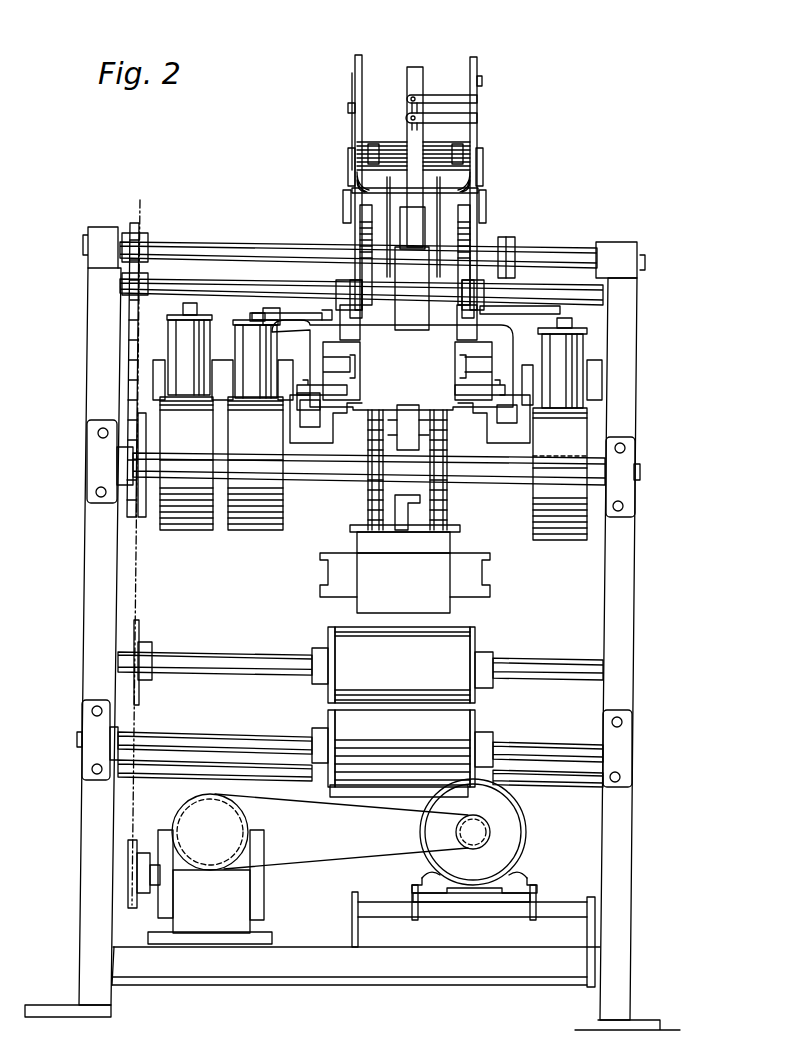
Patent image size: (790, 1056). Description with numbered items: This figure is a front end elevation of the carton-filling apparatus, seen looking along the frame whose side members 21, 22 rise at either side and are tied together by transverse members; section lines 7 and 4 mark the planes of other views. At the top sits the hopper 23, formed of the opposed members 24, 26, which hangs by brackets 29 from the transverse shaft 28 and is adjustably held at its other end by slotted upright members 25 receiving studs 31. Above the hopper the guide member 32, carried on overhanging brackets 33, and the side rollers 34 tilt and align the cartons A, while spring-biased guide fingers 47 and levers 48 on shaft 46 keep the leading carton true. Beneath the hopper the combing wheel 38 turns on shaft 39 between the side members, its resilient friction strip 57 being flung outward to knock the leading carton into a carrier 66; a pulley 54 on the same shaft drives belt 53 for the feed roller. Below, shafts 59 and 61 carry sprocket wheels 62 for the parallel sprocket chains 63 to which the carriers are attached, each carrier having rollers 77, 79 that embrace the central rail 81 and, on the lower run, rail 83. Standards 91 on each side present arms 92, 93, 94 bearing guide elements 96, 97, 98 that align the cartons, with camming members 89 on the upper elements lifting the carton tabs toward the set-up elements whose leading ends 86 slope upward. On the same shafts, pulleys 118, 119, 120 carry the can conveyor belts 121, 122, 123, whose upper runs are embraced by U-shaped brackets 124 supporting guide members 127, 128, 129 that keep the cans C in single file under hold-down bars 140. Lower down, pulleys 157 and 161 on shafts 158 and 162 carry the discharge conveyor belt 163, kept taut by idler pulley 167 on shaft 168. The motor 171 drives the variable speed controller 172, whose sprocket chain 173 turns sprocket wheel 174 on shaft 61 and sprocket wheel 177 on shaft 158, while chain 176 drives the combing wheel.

The section line 7- 7 is at (392, 18).
The section line 4- 4 is at (303, 218).
The side member 21 is at (86, 527).
The side member 22 is at (632, 533).
The hopper 23 is at (350, 90).
The hopper member 24 is at (354, 66).
The upright member 25 is at (348, 105).
The hopper member 26 is at (478, 60).
The transverse shaft 28 is at (578, 292).
The bracket 29 is at (345, 276).
The stud 31 is at (350, 112).
The guide member 32 is at (406, 72).
The overhanging bracket 33 is at (480, 115).
The roller 34 is at (378, 141).
The carton A is at (476, 168).
The combing wheel 38 is at (412, 228).
The shaft 39 is at (570, 258).
The shaft 46 is at (466, 182).
The guide finger 47 is at (437, 189).
The lever 48 is at (343, 206).
The belt 53 is at (508, 240).
The pulley 54 is at (517, 244).
The strip of resilient friction material 57 is at (410, 267).
The shaft 59 is at (640, 475).
The shaft 61 is at (369, 454).
The sprocket wheel 62 is at (368, 514).
The sprocket chain 63 is at (368, 418).
The carrier 66 is at (412, 358).
The roller 77 is at (418, 505).
The roller 79 is at (405, 530).
The rail 81 is at (397, 428).
The rail 83 is at (405, 518).
The leading end 86 is at (470, 306).
The camming member 89 is at (360, 325).
The standard 91 is at (315, 360).
The arm 92 is at (490, 338).
The arm 93 is at (488, 372).
The arm 94 is at (486, 412).
The guide element 96 is at (514, 308).
The guide element 97 is at (355, 365).
The guide element 98 is at (350, 390).
The conveyor belt pulley 118 is at (212, 528).
The conveyor belt pulley 119 is at (283, 522).
The conveyor belt pulley 120 is at (534, 520).
The conveyor belt 121 is at (180, 400).
The conveyor belt 122 is at (250, 400).
The conveyor belt 123 is at (560, 412).
The U-shaped bracket 124 is at (160, 362).
The guide member 127 is at (185, 345).
The guide member 128 is at (240, 350).
The guide member 129 is at (558, 365).
The can C is at (210, 340).
The hold-down bar 140 is at (255, 313).
The pulley 157 is at (478, 638).
The shaft 158 is at (262, 655).
The pulley 161 is at (478, 728).
The shaft 162 is at (560, 752).
The discharge conveyor belt 163 is at (345, 626).
The idler pulley 167 is at (367, 795).
The shaft 168 is at (270, 777).
The motor 171 is at (522, 812).
The variable speed controller 172 is at (240, 822).
The sprocket chain 173 is at (145, 714).
The sprocket wheel 174 is at (143, 513).
The sprocket chain 176 is at (138, 325).
The sprocket wheel 177 is at (150, 640).